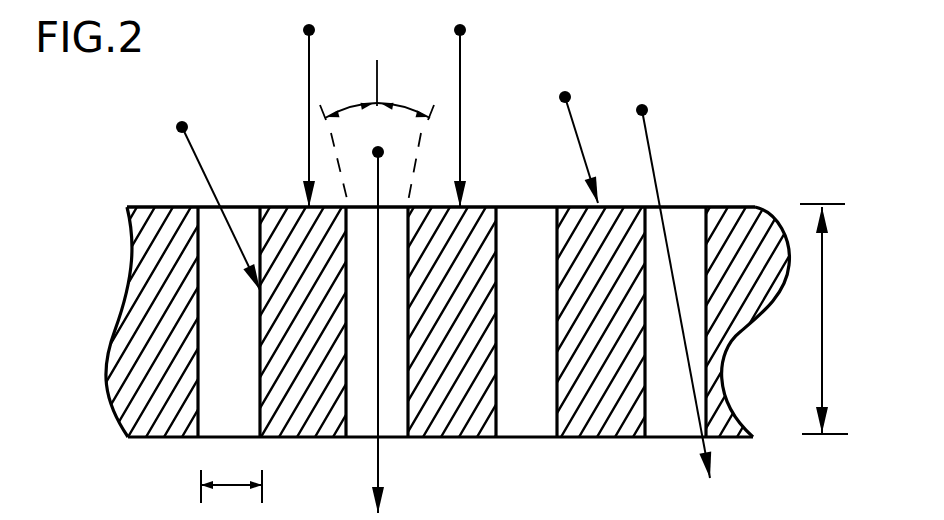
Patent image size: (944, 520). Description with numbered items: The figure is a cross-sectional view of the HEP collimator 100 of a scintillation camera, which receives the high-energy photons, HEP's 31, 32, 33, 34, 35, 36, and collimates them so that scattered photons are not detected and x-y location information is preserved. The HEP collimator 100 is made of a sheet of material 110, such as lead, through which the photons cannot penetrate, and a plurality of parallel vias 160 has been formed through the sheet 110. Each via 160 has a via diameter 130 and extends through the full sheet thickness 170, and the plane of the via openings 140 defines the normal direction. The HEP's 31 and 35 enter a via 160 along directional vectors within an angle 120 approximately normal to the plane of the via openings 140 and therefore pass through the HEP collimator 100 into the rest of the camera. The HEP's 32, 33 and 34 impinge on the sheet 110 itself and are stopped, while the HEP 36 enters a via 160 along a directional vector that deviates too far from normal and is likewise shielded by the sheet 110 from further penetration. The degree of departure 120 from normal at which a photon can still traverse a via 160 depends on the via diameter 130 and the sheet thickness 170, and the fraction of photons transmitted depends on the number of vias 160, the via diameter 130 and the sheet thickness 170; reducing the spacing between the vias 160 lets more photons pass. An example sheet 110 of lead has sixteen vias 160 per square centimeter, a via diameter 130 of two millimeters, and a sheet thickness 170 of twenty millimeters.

The HEP collimator 100 is at (95, 258).
The sheet of material 110 is at (155, 440).
The angle 120 is at (406, 105).
The via diameter 130 is at (231, 495).
The via openings 140 is at (247, 205).
The vias 160 is at (247, 438).
The sheet thickness 170 is at (839, 319).
The HEP 31 is at (372, 150).
The HEP 32 is at (466, 26).
The HEP 33 is at (302, 28).
The HEP 34 is at (567, 92).
The HEP 35 is at (648, 108).
The HEP 36 is at (176, 125).